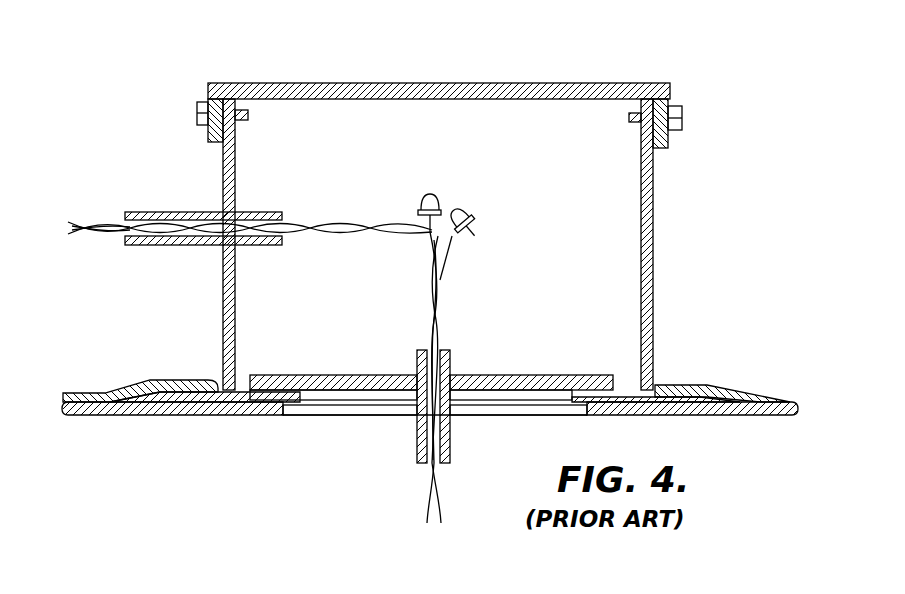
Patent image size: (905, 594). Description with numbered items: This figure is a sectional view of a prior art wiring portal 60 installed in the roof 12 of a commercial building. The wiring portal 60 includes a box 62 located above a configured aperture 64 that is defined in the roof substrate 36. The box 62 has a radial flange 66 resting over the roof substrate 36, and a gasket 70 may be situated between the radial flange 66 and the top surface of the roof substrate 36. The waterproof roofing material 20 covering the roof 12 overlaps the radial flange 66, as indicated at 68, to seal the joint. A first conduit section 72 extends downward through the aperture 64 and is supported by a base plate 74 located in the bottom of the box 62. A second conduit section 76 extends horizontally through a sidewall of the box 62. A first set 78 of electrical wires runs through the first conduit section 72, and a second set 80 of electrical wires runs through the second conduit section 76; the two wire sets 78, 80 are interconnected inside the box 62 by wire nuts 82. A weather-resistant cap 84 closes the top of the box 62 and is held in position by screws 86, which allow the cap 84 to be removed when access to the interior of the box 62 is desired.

The roof 12 is at (92, 367).
The roofing material 20 is at (758, 402).
The roof substrate 36 is at (730, 416).
The wiring portal 60 is at (707, 118).
The box 62 is at (653, 275).
The configured aperture 64 is at (323, 413).
The radial flange 66 is at (218, 390).
The overlap of roofing material 68 is at (680, 385).
The gasket 70 is at (147, 379).
The first conduit section 72 is at (452, 360).
The base plate 74 is at (300, 375).
The second conduit section 76 is at (153, 212).
The first set of electrical wires 78 is at (449, 283).
The second set of electrical wires 80 is at (332, 221).
The wire nuts 82 is at (437, 195).
The weather-resistant cap 84 is at (405, 83).
The screws 86 is at (202, 102).